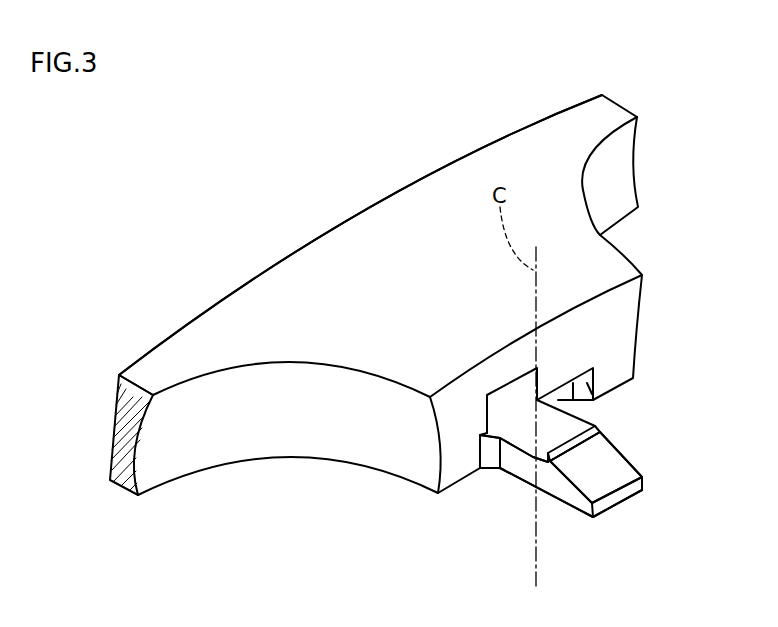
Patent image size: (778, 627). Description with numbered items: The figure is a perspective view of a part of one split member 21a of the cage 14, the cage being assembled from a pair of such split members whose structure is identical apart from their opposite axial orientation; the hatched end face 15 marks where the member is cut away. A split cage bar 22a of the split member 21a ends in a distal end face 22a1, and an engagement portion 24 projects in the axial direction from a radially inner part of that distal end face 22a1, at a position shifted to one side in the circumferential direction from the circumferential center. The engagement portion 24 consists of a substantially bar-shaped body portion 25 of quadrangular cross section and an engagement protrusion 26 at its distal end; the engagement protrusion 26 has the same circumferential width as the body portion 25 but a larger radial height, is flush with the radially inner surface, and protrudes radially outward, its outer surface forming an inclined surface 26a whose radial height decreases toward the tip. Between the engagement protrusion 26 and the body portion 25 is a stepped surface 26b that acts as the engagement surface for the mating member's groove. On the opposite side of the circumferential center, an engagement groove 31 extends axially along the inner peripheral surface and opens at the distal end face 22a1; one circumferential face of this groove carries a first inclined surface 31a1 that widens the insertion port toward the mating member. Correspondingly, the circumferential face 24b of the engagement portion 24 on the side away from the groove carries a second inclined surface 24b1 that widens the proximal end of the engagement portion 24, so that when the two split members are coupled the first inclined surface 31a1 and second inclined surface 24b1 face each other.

The cage 14 is at (272, 202).
The split member 21a is at (320, 218).
The end face of core 15 is at (152, 368).
The split cage bar 22a is at (610, 270).
The distal end face 22a1 is at (625, 340).
The engagement groove 31 is at (567, 405).
The first inclined surface 31a1 is at (600, 400).
The engagement portion 24 is at (623, 518).
The second inclined surface 24b1 is at (490, 457).
The circumferential face 24b is at (530, 475).
The body portion 25 is at (523, 466).
The engagement protrusion 26 is at (585, 505).
The inclined surface 26a is at (595, 465).
The stepped surface 26b is at (535, 460).